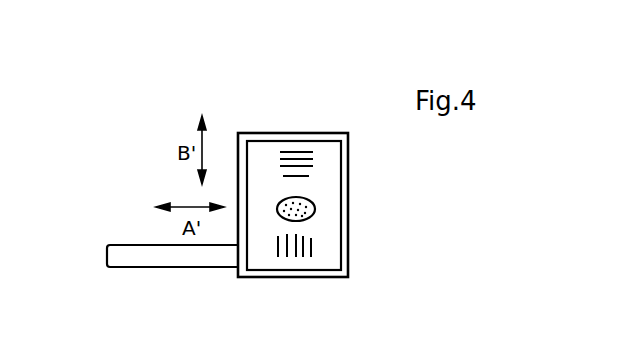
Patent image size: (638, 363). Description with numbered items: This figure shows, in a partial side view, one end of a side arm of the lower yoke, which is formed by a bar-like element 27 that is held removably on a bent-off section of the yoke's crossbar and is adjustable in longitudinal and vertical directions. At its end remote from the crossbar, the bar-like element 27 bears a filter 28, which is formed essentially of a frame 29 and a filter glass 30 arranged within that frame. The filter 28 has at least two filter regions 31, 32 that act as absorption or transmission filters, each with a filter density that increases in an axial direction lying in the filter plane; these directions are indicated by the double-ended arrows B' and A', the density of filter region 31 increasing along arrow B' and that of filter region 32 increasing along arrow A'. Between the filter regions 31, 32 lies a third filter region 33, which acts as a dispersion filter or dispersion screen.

The bar-like element 27 is at (136, 253).
The filter 28 is at (363, 178).
The frame 29 is at (348, 248).
The filter glass 30 is at (322, 260).
The filter region 31 is at (295, 168).
The filter region 32 is at (295, 250).
The third filter region 33 is at (315, 209).